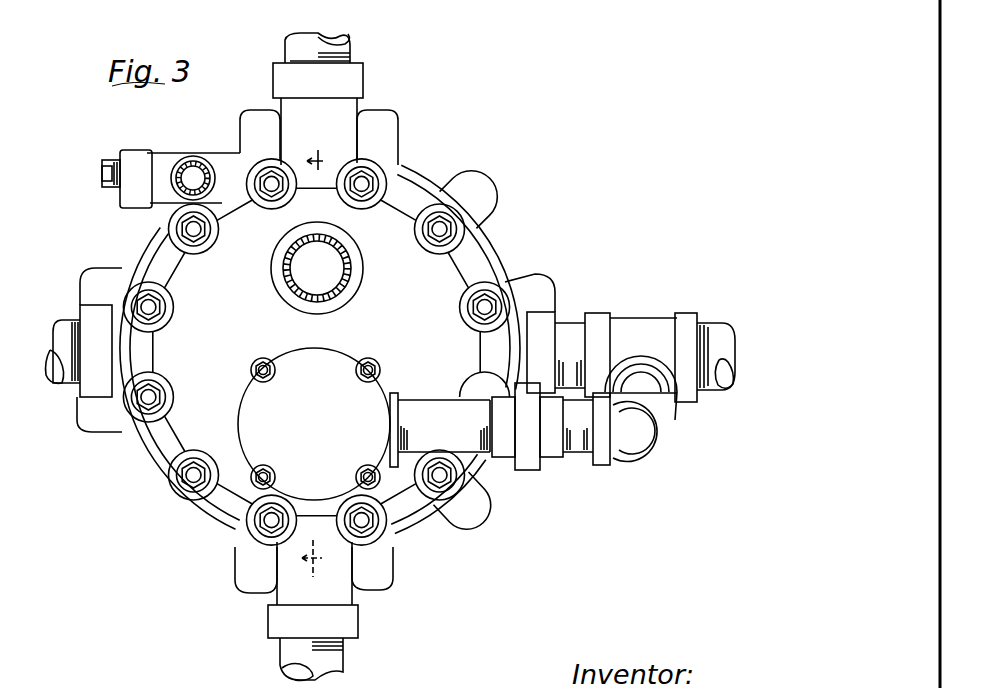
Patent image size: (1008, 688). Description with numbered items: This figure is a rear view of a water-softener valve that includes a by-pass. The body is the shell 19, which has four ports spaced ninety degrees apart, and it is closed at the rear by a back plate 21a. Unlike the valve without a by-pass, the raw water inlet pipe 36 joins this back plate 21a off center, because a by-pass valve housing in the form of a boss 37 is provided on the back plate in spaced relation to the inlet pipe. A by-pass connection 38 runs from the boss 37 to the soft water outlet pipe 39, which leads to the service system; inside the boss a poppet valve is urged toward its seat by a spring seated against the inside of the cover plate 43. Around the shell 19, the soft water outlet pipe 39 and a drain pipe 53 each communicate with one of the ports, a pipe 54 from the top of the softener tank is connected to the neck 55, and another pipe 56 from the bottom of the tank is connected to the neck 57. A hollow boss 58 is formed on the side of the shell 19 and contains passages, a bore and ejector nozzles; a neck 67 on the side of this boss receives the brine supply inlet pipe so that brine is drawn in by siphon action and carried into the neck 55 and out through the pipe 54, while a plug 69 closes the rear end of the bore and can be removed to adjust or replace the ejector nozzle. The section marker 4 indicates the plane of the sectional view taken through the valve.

The section line of FIG. 4 is at (316, 365).
The shell 19 is at (407, 182).
The back plate 21a is at (440, 275).
The raw water inlet pipe 36 is at (353, 265).
The boss 37 is at (309, 349).
The by-pass connection 38 is at (438, 408).
The soft water outlet pipe 39 is at (712, 325).
The cover plate 43 is at (314, 424).
The drain pipe 53 is at (63, 389).
The pipe 54 is at (330, 34).
The neck 55 is at (342, 113).
The pipe 56 is at (337, 656).
The neck 57 is at (338, 594).
The hollow boss 58 is at (222, 162).
The neck 67 is at (203, 160).
The plug 69 is at (110, 186).